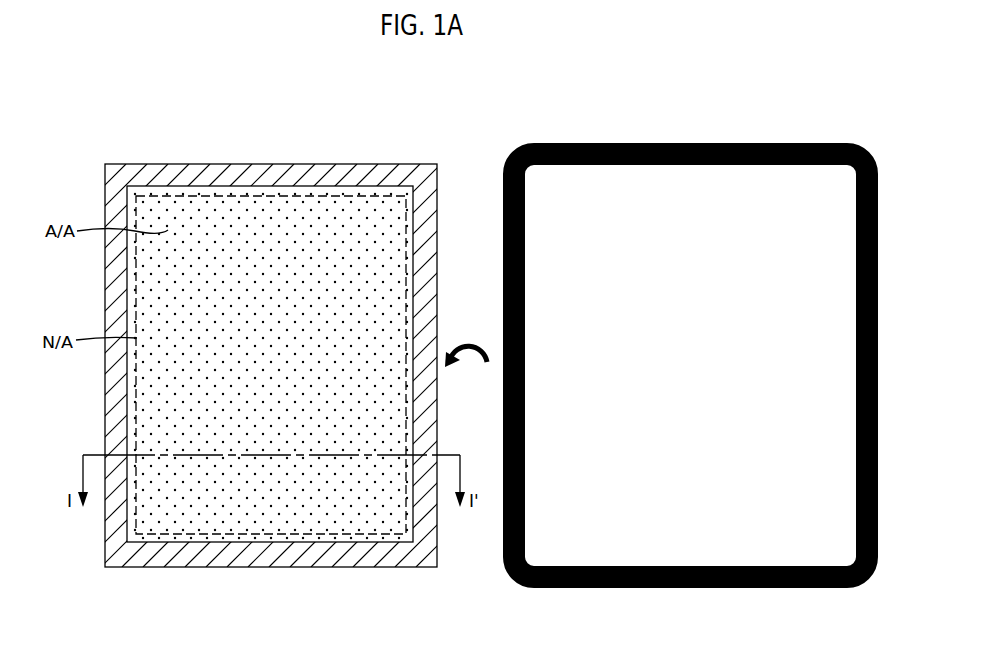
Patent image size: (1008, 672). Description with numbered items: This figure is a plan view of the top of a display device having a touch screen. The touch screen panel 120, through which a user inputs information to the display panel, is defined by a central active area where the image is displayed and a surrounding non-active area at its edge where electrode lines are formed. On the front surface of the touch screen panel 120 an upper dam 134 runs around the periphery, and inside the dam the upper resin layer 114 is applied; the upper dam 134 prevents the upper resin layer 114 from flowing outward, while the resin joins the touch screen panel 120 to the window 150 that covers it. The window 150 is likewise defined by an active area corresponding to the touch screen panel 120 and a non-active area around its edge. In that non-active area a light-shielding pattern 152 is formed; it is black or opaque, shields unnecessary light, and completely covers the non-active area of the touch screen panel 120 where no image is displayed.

The upper resin layer 114 is at (377, 247).
The touch screen panel 120 is at (105, 546).
The upper dam 134 is at (115, 290).
The window 150 is at (690, 331).
The light-shielding pattern 152 is at (666, 143).